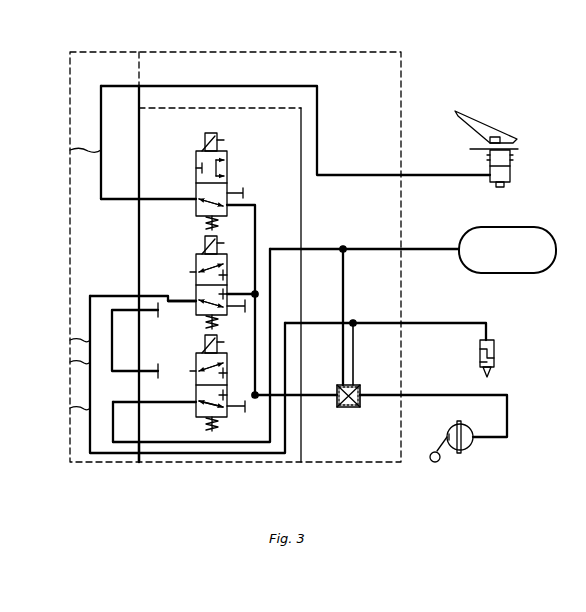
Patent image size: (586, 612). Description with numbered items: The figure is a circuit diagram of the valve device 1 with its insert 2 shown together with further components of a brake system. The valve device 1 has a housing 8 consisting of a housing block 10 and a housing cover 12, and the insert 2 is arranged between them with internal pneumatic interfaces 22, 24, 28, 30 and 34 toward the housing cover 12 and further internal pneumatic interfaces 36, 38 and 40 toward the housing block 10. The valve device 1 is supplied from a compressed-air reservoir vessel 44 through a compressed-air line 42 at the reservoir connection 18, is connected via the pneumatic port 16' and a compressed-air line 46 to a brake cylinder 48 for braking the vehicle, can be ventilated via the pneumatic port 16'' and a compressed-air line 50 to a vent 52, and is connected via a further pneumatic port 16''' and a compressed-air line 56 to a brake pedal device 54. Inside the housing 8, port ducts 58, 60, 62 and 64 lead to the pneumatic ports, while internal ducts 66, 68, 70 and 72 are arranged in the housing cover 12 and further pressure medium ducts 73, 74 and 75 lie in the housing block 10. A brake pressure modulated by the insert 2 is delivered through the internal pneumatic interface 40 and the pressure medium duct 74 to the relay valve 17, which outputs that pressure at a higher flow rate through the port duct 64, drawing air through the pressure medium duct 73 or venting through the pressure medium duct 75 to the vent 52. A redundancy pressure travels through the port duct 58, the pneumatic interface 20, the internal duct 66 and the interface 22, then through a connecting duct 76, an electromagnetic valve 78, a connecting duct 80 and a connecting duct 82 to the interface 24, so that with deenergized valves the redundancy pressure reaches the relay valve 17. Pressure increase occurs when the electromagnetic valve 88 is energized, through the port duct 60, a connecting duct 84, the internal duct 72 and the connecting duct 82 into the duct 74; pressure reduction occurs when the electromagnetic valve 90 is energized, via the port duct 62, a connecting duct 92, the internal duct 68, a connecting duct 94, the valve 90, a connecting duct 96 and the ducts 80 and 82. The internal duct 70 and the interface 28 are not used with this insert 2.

The valve device 1 is at (407, 29).
The insert 2 is at (263, 107).
The housing 8 is at (141, 43).
The housing block 10 is at (364, 91).
The housing cover 12 is at (92, 97).
The pneumatic port 16' is at (419, 409).
The pneumatic port 16'' is at (421, 338).
The pneumatic port 16''' is at (422, 162).
The relay valve 17 is at (346, 409).
The supply connection 18 is at (404, 248).
The pneumatic interface 20 is at (137, 83).
The internal pneumatic interface 22 is at (137, 203).
The internal pneumatic interface 24 is at (137, 292).
The internal pneumatic interface 28 is at (136, 313).
The internal pneumatic interface 30 is at (134, 405).
The internal pneumatic interface 34 is at (137, 462).
The internal pneumatic interface 36 is at (303, 249).
The internal pneumatic interface 38 is at (303, 327).
The internal pneumatic interface 40 is at (303, 398).
The compressed-air line 42 is at (428, 252).
The compressed-air reservoir vessel 44 is at (511, 260).
The compressed-air line 46 is at (433, 392).
The brake cylinder 48 is at (465, 453).
The compressed-air line 50 is at (443, 322).
The vent 52 is at (497, 356).
The brake pedal device 54 is at (526, 138).
The compressed-air line 56 is at (456, 178).
The port duct 58 is at (235, 85).
The port duct 60 is at (343, 247).
The port duct 62 is at (353, 321).
The port duct 64 is at (383, 398).
The internal duct 66 is at (175, 419).
The internal duct 68 is at (65, 339).
The internal duct 70 is at (65, 361).
The internal duct 72 is at (65, 407).
The pressure medium duct 73 is at (345, 275).
The pressure medium duct 74 is at (332, 391).
The pressure medium duct 75 is at (354, 376).
The connecting duct 76 is at (175, 202).
The electromagnetic valve 78 is at (195, 177).
The connecting duct 80 is at (246, 306).
The connecting duct 82 is at (137, 446).
The connecting duct 84 is at (195, 455).
The electromagnetic valve 88 is at (195, 357).
The electromagnetic valve 90 is at (195, 270).
The connecting duct 92 is at (234, 464).
The connecting duct 94 is at (175, 303).
The connecting duct 96 is at (237, 293).